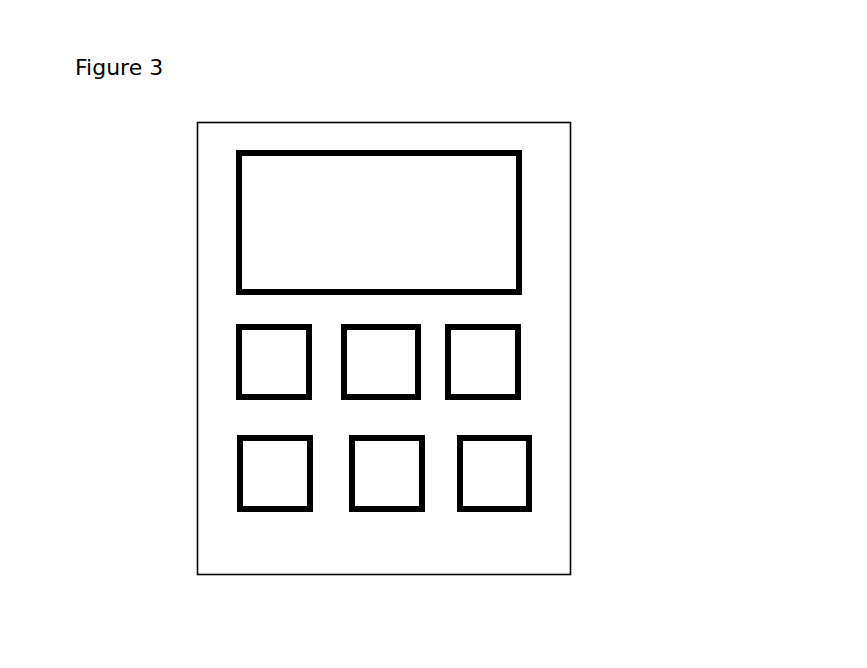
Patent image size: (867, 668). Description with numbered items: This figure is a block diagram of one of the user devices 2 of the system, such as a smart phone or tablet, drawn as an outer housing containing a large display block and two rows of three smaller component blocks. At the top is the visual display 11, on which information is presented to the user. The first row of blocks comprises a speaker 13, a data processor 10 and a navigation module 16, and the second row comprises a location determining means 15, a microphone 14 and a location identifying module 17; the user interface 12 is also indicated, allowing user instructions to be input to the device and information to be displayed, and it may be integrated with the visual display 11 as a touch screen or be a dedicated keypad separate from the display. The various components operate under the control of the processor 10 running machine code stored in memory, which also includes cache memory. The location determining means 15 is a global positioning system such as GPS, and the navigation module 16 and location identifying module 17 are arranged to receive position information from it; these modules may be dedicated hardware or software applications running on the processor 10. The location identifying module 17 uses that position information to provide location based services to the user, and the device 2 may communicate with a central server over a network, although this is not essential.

The user device 2 is at (197, 231).
The visual display 11 is at (385, 200).
The speaker 13 is at (255, 354).
The data processor 10 is at (369, 356).
The navigation module 16 is at (506, 353).
The user interface 12 is at (513, 402).
The location determining means 15 is at (272, 455).
The microphone 14 is at (385, 472).
The location identifying module 17 is at (505, 472).